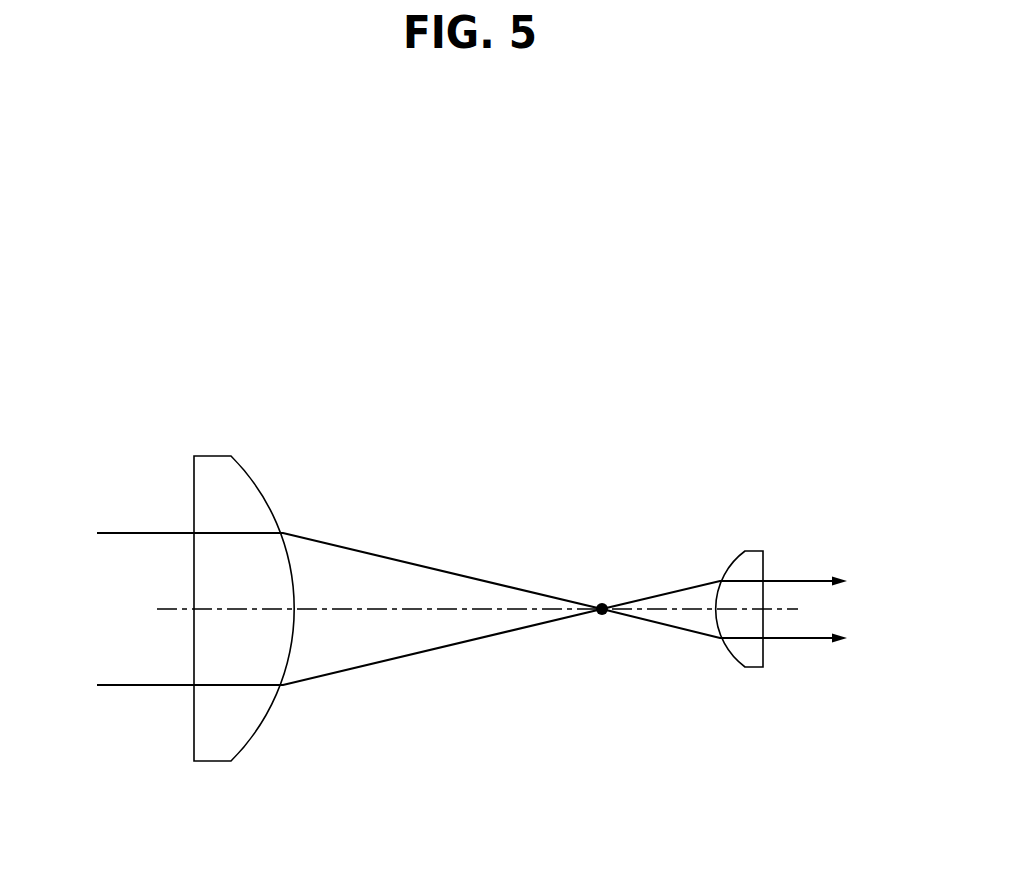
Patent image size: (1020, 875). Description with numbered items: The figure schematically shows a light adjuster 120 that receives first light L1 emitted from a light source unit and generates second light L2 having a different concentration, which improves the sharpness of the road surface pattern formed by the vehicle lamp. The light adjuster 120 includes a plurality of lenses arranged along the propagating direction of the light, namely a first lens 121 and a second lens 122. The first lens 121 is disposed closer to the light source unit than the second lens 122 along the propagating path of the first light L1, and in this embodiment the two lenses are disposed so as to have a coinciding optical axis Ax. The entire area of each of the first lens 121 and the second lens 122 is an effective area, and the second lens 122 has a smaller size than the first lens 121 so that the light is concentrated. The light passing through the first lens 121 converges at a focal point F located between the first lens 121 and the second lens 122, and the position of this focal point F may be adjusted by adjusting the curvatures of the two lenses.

The light adjuster 120 is at (696, 322).
The first lens 121 is at (212, 456).
The second lens 122 is at (758, 551).
The optical axis Ax is at (460, 610).
The focal point F is at (602, 628).
The first light L1 is at (95, 533).
The second light L2 is at (853, 580).